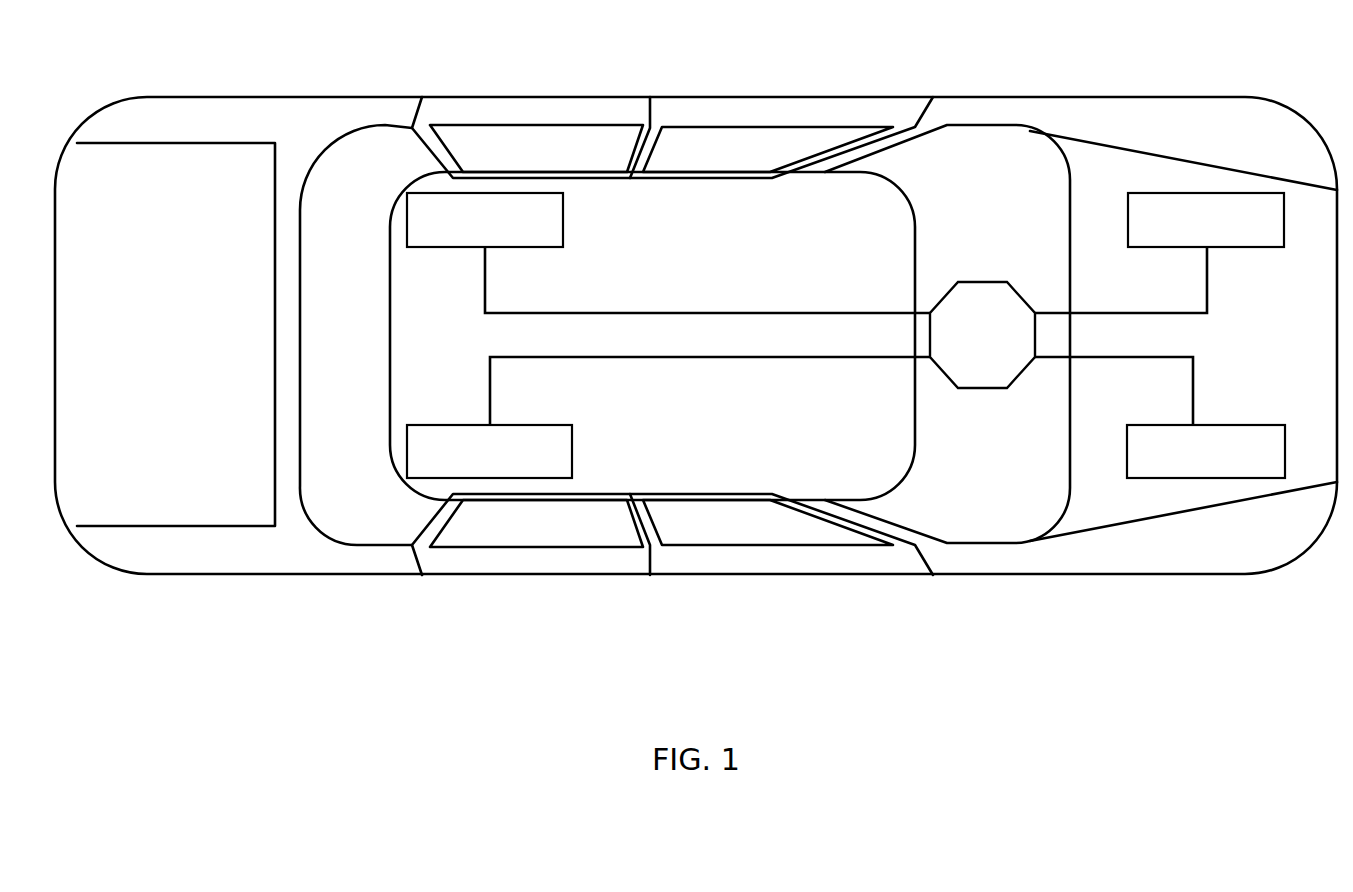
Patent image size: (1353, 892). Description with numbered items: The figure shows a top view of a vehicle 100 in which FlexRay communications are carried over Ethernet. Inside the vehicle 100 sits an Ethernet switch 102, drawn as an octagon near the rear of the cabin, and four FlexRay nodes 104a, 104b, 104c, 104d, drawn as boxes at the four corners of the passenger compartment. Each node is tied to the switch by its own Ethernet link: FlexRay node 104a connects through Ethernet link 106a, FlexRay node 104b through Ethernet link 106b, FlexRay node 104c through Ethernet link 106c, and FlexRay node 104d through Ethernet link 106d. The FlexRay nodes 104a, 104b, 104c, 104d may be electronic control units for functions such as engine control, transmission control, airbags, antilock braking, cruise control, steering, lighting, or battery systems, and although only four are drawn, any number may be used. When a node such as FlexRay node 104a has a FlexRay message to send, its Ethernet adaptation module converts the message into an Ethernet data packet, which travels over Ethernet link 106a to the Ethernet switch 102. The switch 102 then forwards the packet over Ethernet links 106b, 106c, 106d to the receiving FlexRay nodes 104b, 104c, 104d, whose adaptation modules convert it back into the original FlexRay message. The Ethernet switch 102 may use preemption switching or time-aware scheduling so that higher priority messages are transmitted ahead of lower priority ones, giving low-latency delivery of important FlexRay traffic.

The vehicle 100 is at (1187, 97).
The Ethernet switch 102 is at (982, 335).
The FlexRay node 104a is at (485, 220).
The FlexRay node 104b is at (1206, 220).
The FlexRay node 104c is at (489, 451).
The FlexRay node 104d is at (1206, 451).
The Ethernet link 106a is at (582, 312).
The Ethernet link 106b is at (1207, 287).
The Ethernet link 106c is at (658, 358).
The Ethernet link 106d is at (1193, 385).